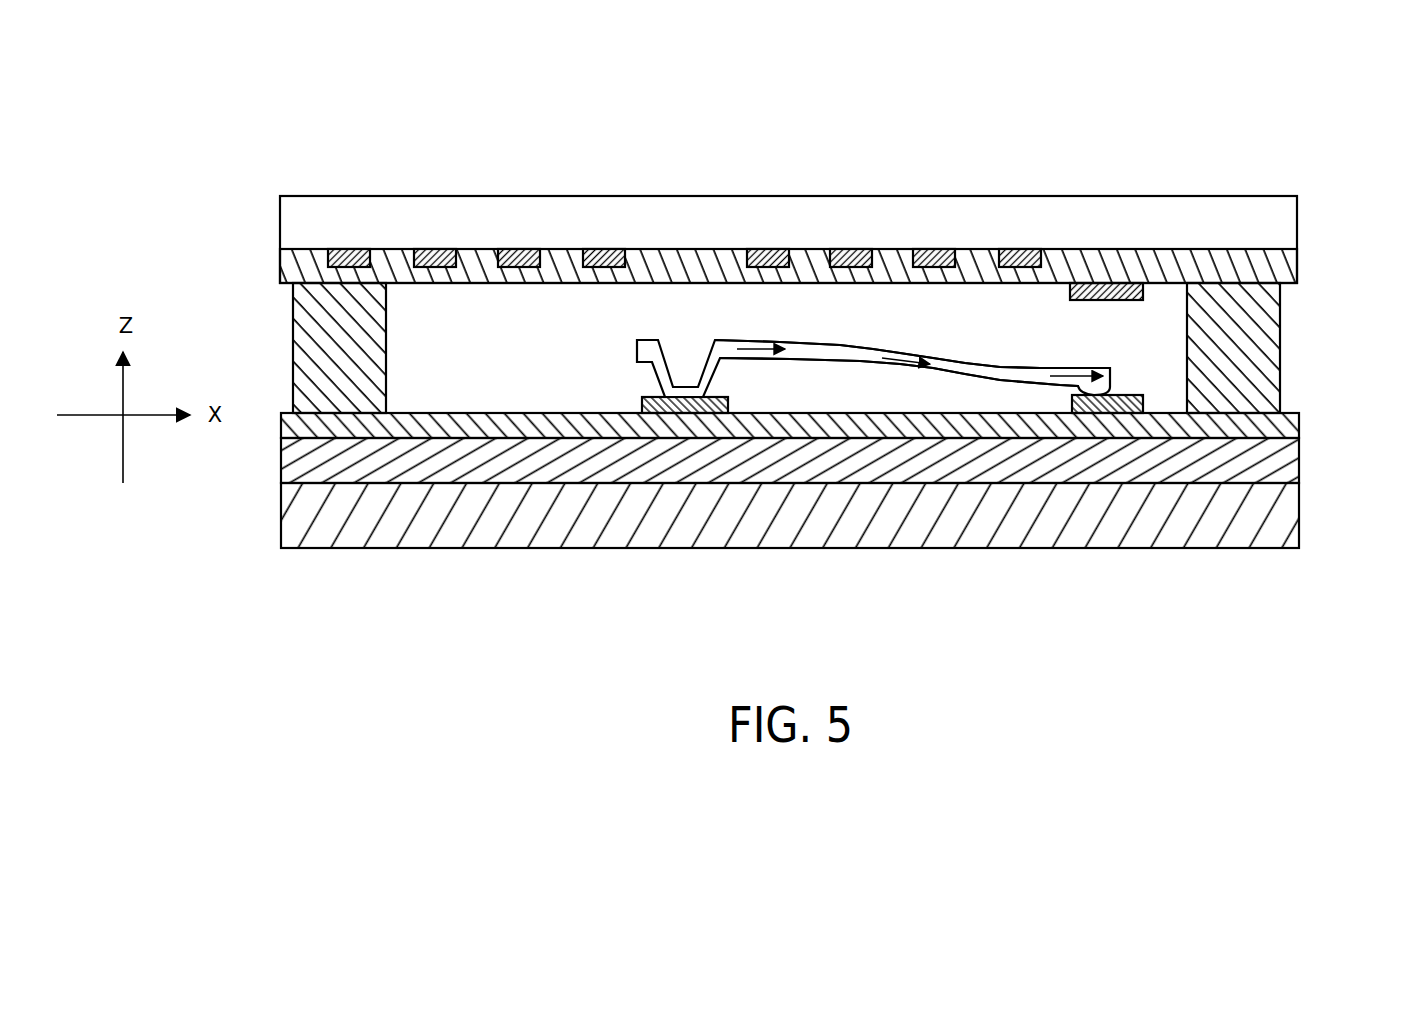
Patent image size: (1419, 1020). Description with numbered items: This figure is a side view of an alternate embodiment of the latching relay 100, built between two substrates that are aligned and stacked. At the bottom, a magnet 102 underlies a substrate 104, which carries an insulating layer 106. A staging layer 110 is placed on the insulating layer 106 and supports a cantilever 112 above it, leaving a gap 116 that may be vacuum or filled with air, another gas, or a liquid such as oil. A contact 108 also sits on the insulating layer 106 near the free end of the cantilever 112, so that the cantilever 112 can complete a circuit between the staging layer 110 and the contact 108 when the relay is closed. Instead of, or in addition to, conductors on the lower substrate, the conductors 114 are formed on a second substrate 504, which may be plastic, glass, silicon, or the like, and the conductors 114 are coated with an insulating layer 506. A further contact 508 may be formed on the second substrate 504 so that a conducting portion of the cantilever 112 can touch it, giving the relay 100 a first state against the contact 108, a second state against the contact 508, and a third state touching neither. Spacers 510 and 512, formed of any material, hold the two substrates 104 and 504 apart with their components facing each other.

The latching relay 100 is at (1195, 147).
The magnet 102 is at (928, 540).
The substrate 104 is at (782, 460).
The insulating layer 106 is at (1299, 409).
The contact 108 is at (1143, 392).
The staging layer 110 is at (633, 403).
The cantilever 112 is at (843, 355).
The conductor 114 is at (605, 250).
The gap 116 is at (744, 404).
The second substrate 504 is at (1201, 233).
The insulating layer 506 is at (1285, 259).
The contact 508 is at (1075, 300).
The spacer 510 is at (296, 327).
The spacer 512 is at (1268, 347).